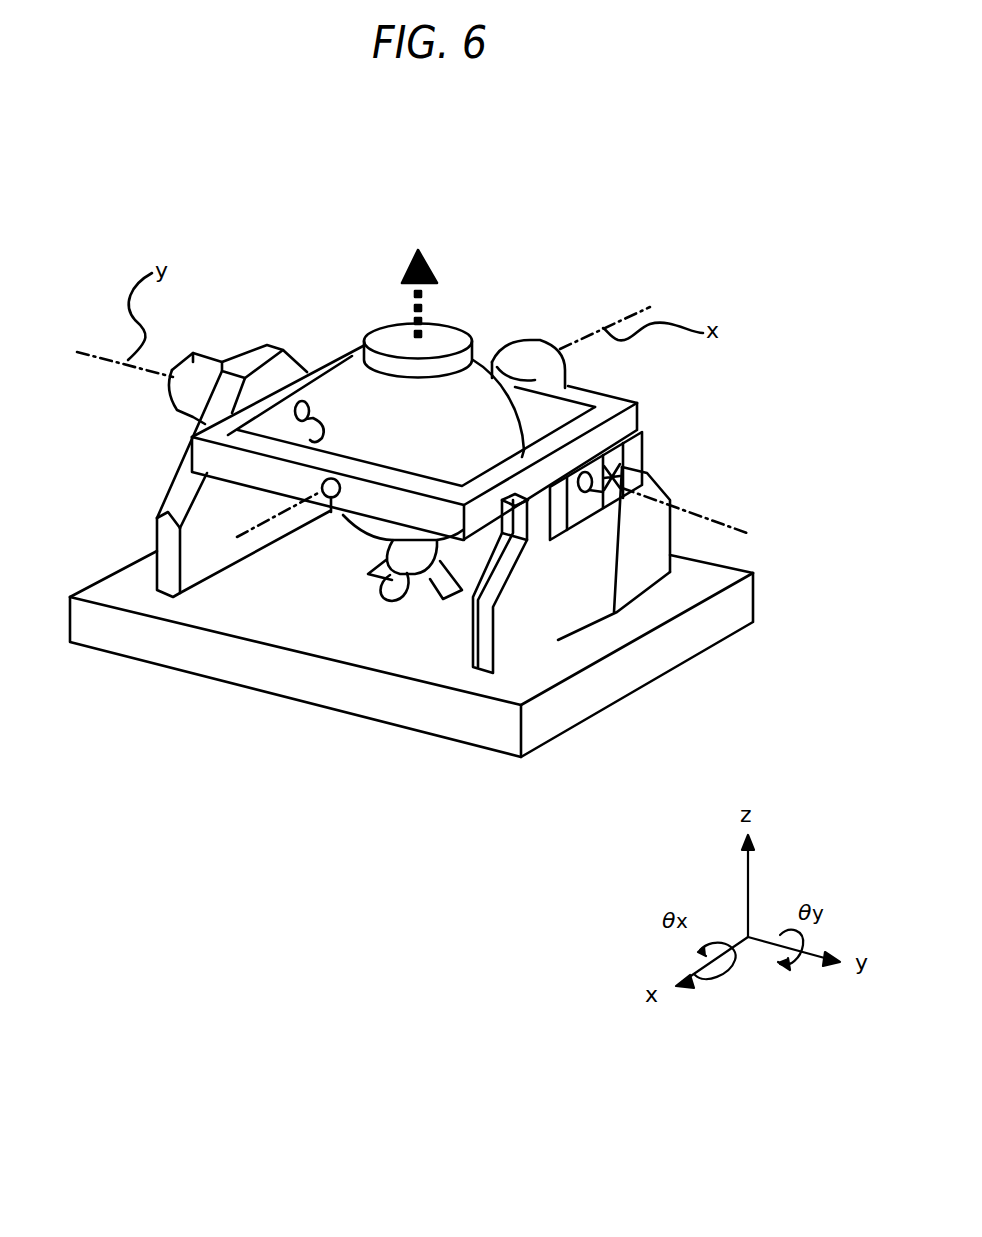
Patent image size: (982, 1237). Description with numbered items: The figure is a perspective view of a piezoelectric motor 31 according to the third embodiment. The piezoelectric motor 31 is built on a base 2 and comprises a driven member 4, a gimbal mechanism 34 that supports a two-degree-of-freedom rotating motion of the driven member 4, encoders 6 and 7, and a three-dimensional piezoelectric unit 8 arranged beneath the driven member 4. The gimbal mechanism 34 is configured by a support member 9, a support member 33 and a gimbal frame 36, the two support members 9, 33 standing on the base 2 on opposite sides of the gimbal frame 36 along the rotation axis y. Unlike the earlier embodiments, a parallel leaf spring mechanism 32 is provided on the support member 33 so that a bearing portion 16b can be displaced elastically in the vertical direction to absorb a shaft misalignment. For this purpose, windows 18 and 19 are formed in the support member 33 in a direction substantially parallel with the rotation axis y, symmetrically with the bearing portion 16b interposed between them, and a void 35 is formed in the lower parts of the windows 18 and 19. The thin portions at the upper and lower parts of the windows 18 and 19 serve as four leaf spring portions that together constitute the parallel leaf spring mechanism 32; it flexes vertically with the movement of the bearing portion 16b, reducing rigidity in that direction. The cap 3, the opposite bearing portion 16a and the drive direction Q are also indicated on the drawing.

The base 2 is at (668, 652).
The top plate 3 is at (443, 340).
The driven member 4 is at (366, 398).
The encoder 6 is at (217, 352).
The encoder 7 is at (538, 342).
The three-dimensional piezoelectric unit 8 is at (435, 605).
The support member 9 is at (158, 548).
The first flexure arm 16a is at (196, 439).
The bearing portion 16b is at (612, 490).
The window 18 is at (332, 512).
The window 19 is at (645, 477).
The piezoelectric motor 31 is at (718, 273).
The parallel leaf spring mechanism 32 is at (639, 464).
The support member 33 is at (550, 600).
The gimbal mechanism 34 is at (682, 442).
The void 35 is at (690, 614).
The gimbal frame 36 is at (576, 390).
The drive direction Q is at (443, 280).